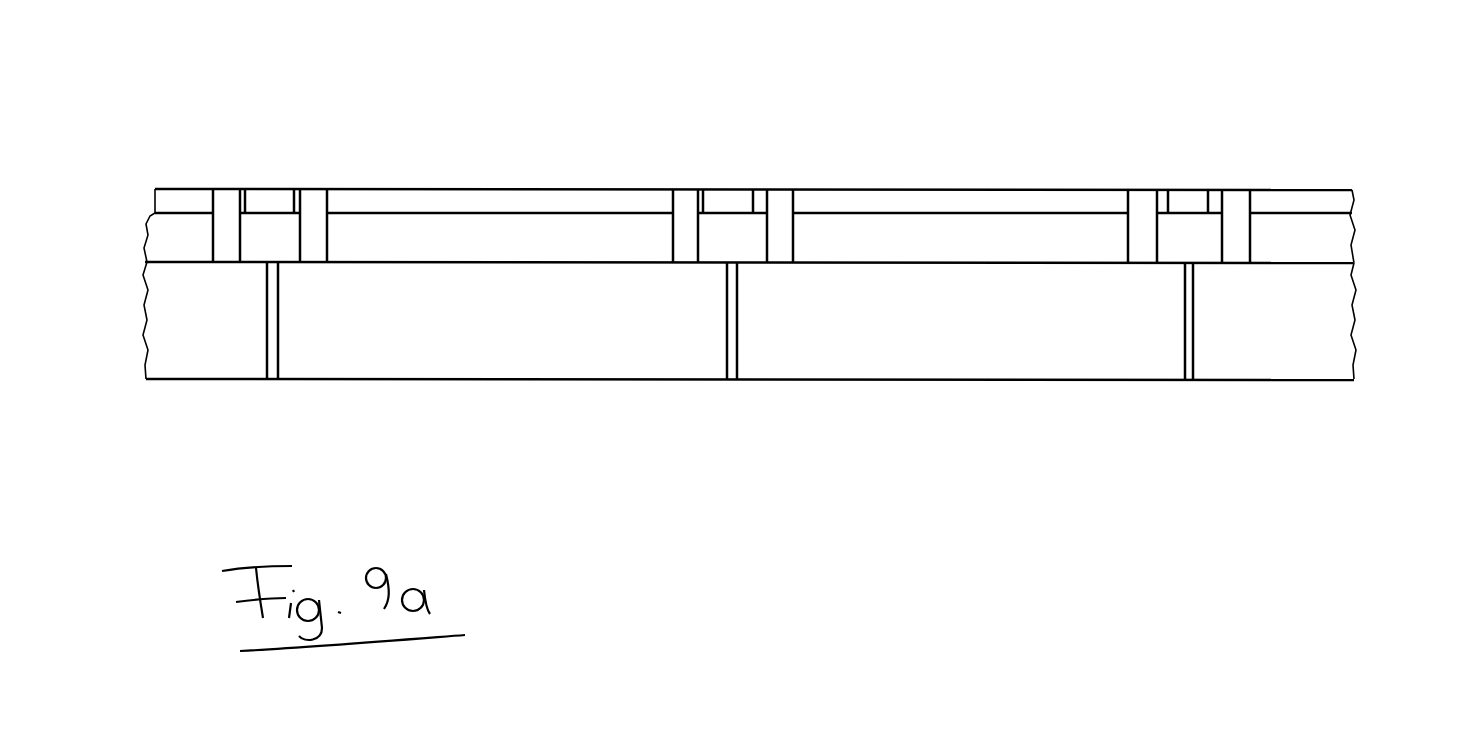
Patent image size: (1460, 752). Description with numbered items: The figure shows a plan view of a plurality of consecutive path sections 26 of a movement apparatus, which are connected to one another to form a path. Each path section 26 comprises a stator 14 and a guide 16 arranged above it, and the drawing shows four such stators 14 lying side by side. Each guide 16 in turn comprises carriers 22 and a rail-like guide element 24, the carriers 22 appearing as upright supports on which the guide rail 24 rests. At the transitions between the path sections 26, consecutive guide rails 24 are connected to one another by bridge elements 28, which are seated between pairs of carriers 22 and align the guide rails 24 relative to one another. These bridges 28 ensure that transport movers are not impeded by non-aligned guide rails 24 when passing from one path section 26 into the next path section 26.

The stator 14 is at (245, 345).
The guide 16 is at (202, 180).
The carrier 22 is at (228, 186).
The rail-like guide element 24 is at (178, 198).
The path section 26 is at (233, 393).
The bridge element 28 is at (270, 186).